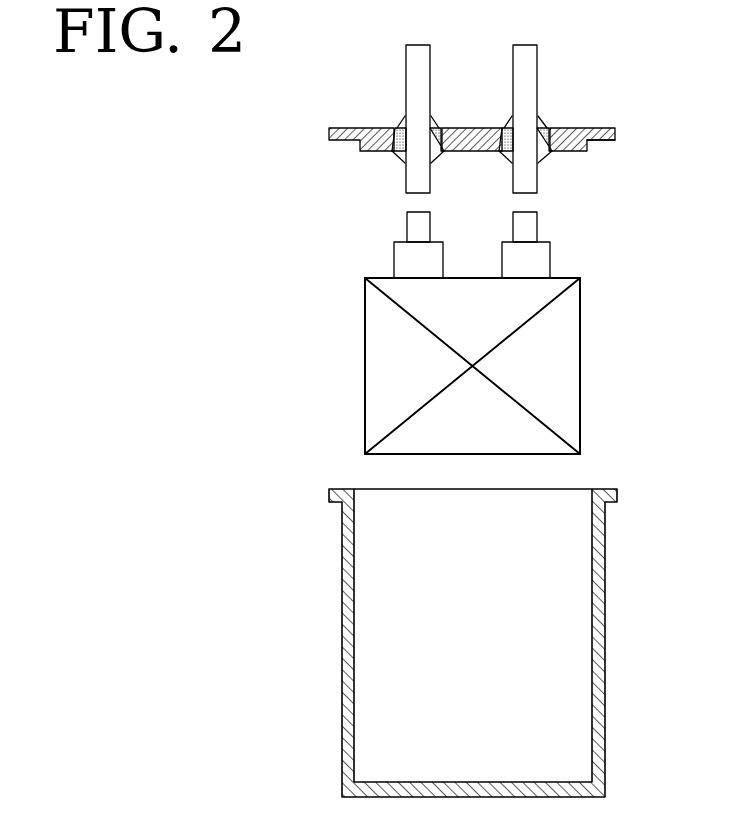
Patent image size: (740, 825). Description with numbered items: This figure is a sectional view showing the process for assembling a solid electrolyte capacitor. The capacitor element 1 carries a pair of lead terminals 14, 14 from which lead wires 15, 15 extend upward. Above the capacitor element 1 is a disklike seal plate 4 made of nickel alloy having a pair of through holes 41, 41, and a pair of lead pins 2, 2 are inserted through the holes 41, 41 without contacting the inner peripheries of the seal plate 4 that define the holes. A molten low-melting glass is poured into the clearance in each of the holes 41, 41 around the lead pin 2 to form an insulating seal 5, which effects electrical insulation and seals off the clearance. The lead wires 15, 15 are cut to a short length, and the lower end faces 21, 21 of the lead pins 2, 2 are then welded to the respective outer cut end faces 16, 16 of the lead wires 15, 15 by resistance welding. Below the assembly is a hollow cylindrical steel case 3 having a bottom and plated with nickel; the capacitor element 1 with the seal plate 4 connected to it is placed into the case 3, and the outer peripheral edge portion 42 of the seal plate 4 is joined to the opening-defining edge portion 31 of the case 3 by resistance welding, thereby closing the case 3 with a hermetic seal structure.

The capacitor element 1 is at (577, 375).
The lead pin 2 is at (408, 72).
The case 3 is at (605, 630).
The seal plate 4 is at (587, 128).
The insulating seal 5 is at (437, 128).
The lead terminal 14 is at (400, 262).
The lead wire 15 is at (412, 228).
The outer end face 16 is at (412, 210).
The lower end face 21 is at (416, 196).
The opening-defining edge portion 31 is at (604, 488).
The through hole 41 is at (398, 128).
The outer peripheral edge portion 42 is at (611, 143).